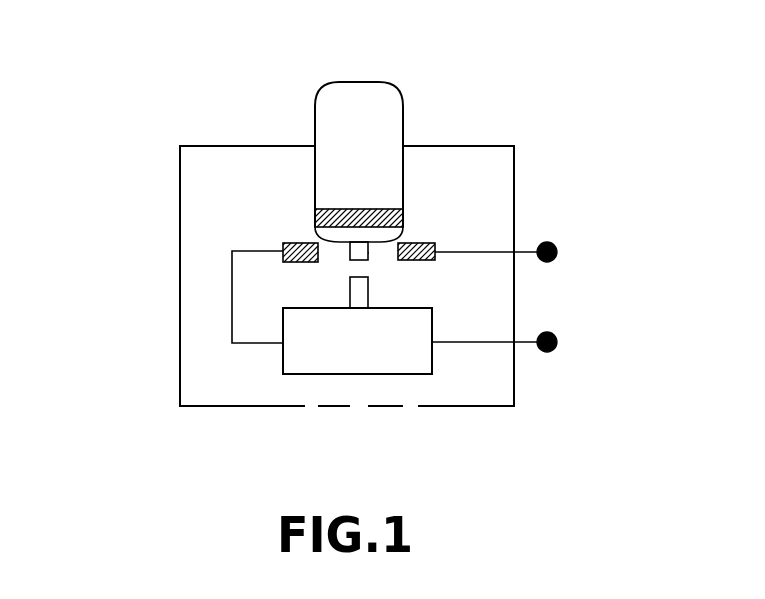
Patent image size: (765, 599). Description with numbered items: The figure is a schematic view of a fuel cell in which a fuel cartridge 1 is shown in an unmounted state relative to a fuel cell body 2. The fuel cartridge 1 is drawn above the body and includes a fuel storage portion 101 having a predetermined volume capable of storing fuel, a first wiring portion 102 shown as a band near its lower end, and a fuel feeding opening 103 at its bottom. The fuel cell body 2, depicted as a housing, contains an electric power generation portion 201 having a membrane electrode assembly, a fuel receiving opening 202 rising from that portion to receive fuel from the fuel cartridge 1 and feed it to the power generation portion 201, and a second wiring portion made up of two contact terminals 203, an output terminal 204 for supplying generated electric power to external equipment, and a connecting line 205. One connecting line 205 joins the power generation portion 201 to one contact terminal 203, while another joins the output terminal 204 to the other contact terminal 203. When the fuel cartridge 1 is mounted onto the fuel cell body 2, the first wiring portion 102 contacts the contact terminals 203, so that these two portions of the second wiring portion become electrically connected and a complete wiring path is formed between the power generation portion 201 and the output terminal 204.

The fuel cartridge 1 is at (522, 12).
The fuel cell body 2 is at (514, 165).
The fuel storage portion 101 is at (368, 92).
The first wiring portion 102 is at (352, 207).
The fuel feeding opening 103 is at (368, 253).
The electric power generation portion 201 is at (345, 374).
The fuel receiving opening 202 is at (350, 293).
The contact terminal 203 is at (283, 245).
The output terminal 204 is at (557, 252).
The connecting line 205 is at (232, 312).